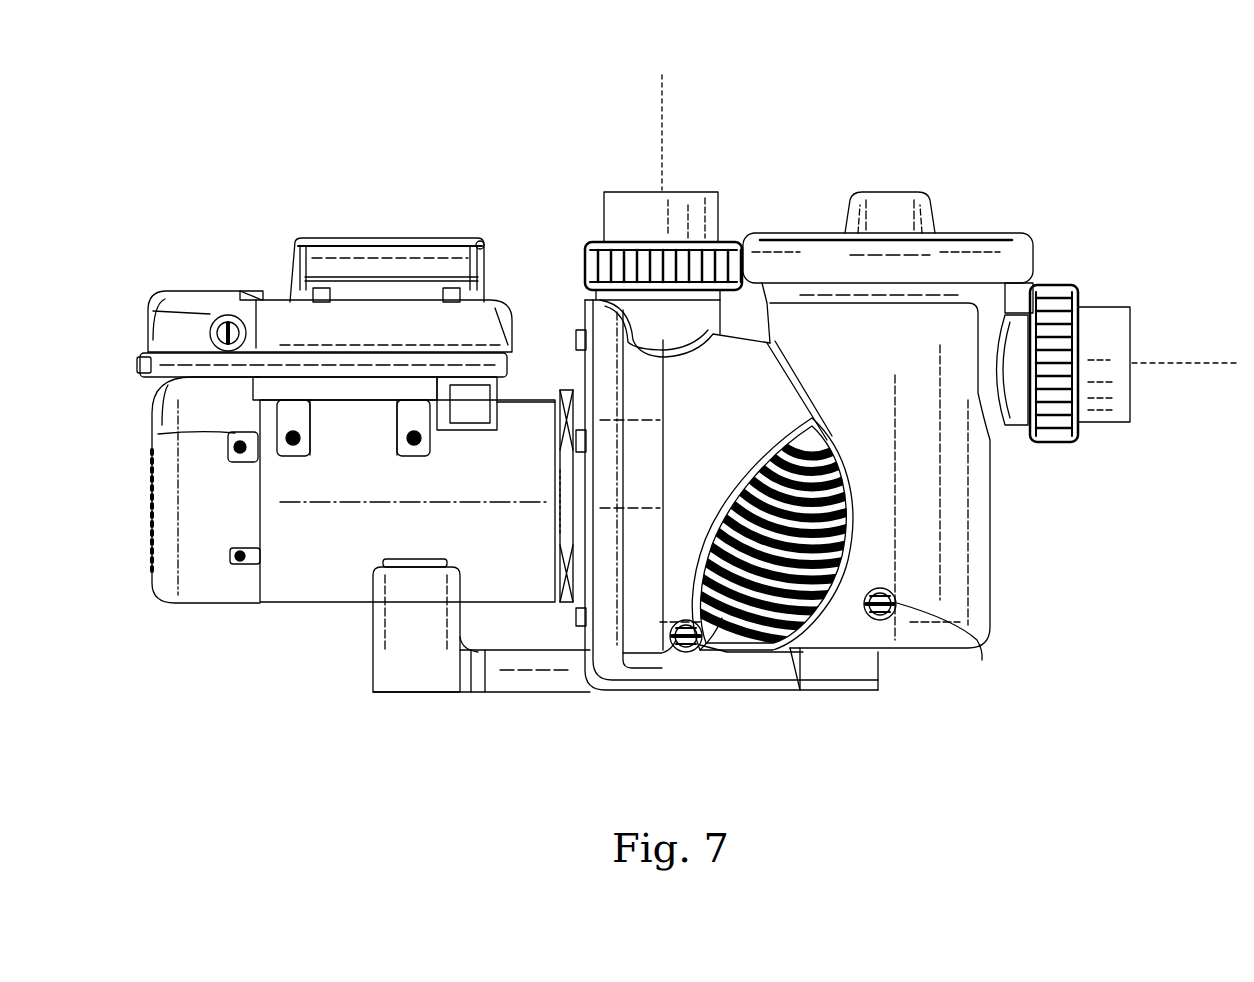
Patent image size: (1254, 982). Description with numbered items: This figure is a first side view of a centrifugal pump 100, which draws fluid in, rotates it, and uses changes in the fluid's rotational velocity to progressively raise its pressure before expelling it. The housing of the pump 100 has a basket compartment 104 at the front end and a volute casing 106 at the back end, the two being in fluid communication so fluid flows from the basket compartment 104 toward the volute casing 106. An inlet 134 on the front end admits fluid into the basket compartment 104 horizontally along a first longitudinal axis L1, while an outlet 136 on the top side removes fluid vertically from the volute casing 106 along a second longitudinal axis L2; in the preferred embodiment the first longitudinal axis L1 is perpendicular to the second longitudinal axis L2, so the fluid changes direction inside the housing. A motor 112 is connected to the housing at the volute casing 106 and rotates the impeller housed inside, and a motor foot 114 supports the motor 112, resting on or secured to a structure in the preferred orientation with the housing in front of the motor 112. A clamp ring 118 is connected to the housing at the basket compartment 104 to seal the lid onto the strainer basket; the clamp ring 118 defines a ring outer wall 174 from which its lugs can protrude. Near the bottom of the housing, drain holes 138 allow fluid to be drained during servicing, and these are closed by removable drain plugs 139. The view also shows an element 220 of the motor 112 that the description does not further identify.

The centrifugal pump 100 is at (1168, 132).
The basket compartment 104 is at (985, 562).
The volute casing 106 is at (648, 650).
The motor 112 is at (186, 645).
The motor foot 114 is at (388, 653).
The clamp ring 118 is at (993, 214).
The inlet 134 is at (1142, 337).
The outlet 136 is at (703, 180).
The drain hole 138 is at (683, 660).
The drain plug 139 is at (727, 652).
The ring outer wall 174 is at (1030, 262).
The motor housing 220 is at (286, 592).
The first longitudinal axis L1 is at (1210, 365).
The second longitudinal axis L2 is at (660, 117).